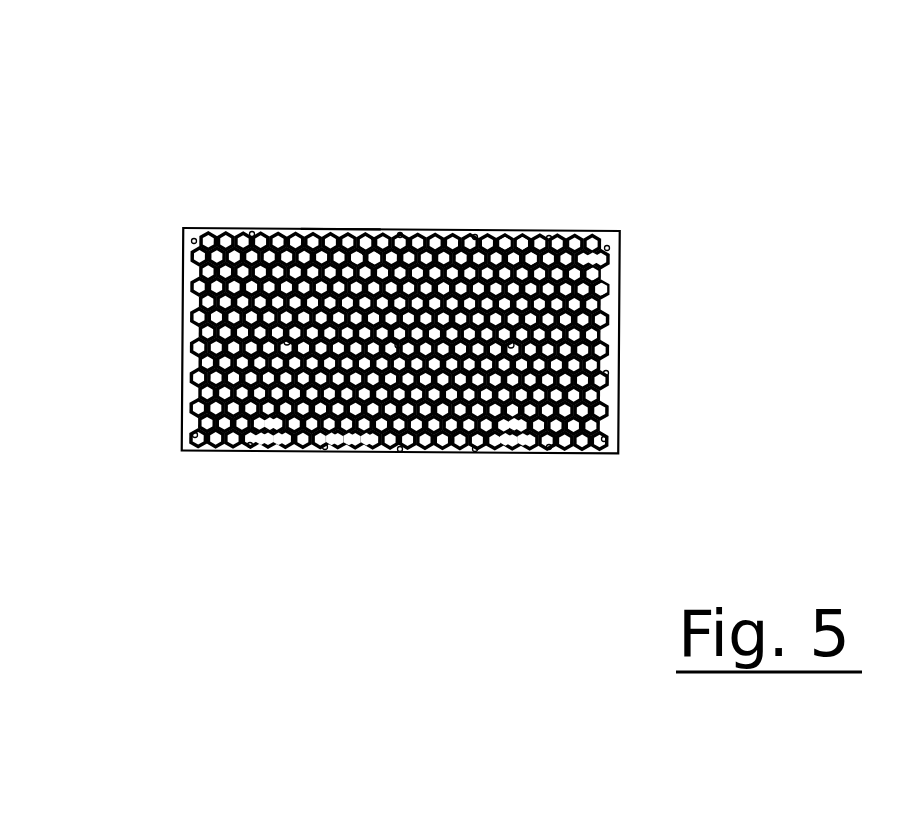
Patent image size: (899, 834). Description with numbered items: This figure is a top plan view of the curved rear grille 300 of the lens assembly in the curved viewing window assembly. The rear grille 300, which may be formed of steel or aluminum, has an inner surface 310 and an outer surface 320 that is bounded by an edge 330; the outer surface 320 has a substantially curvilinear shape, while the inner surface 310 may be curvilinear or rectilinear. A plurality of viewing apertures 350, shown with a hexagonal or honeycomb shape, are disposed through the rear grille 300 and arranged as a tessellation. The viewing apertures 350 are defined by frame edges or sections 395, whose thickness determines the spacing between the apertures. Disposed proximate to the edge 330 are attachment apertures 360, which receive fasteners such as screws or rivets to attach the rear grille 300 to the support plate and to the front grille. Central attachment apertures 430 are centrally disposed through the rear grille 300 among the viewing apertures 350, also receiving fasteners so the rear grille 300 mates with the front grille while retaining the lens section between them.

The rear grille 300 is at (338, 238).
The inner surface 310 is at (338, 274).
The outer surface 320 is at (333, 329).
The edge 330 is at (341, 126).
The viewing apertures 350 is at (465, 363).
The attachment apertures 360 is at (394, 312).
The frame sections 395 is at (486, 342).
The central attachment apertures 430 is at (269, 343).